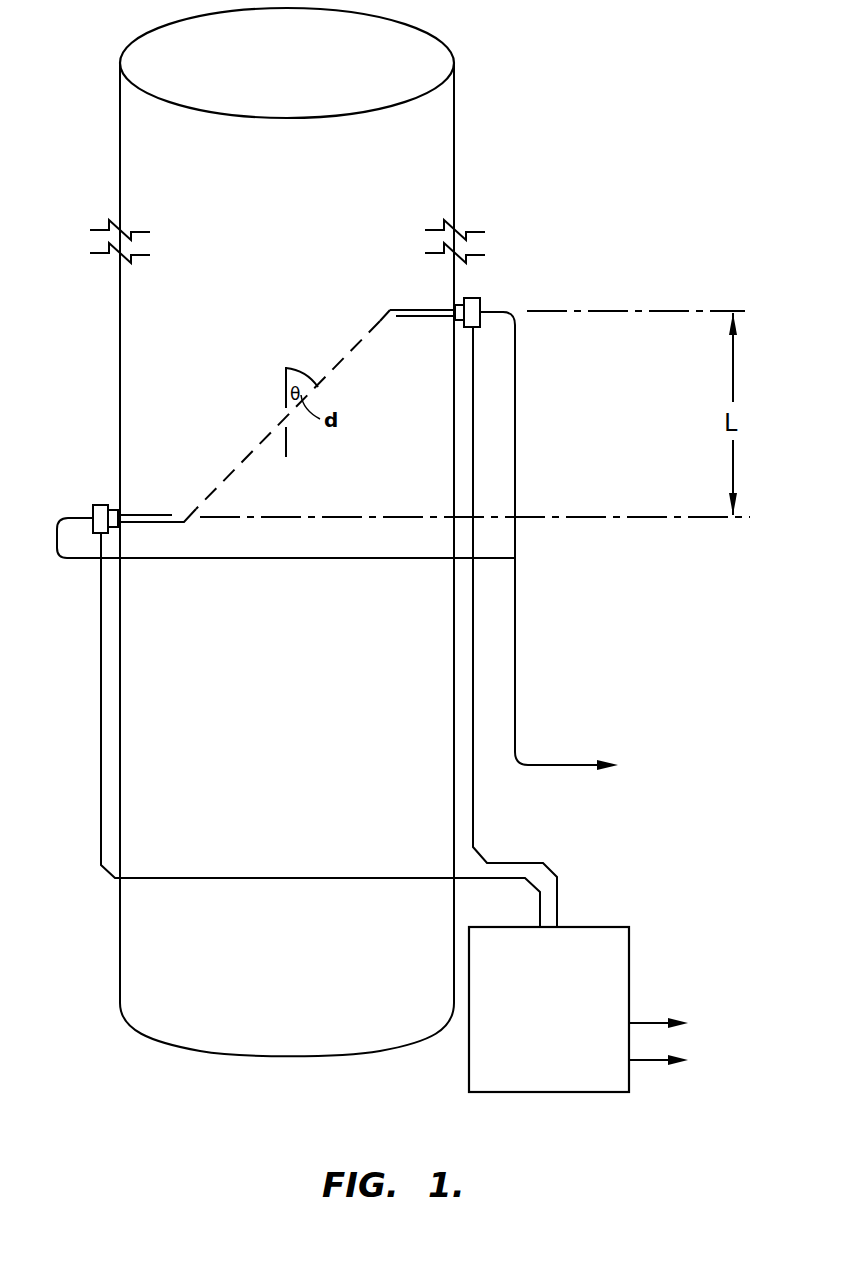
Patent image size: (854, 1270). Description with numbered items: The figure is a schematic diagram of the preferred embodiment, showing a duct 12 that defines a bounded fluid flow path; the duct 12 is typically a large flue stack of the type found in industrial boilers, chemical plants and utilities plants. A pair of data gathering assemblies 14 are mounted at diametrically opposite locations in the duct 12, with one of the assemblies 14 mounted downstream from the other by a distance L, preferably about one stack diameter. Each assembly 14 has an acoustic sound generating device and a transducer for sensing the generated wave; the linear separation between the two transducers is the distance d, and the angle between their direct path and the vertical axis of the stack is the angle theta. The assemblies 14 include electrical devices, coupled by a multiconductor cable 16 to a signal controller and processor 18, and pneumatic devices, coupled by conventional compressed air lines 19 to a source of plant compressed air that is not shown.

The duct 12 is at (431, 147).
The data gathering assembly 14 is at (413, 308).
The multiconductor cable 16 is at (101, 757).
The signal controller and processor 18 is at (612, 958).
The compressed air line 19 is at (516, 593).